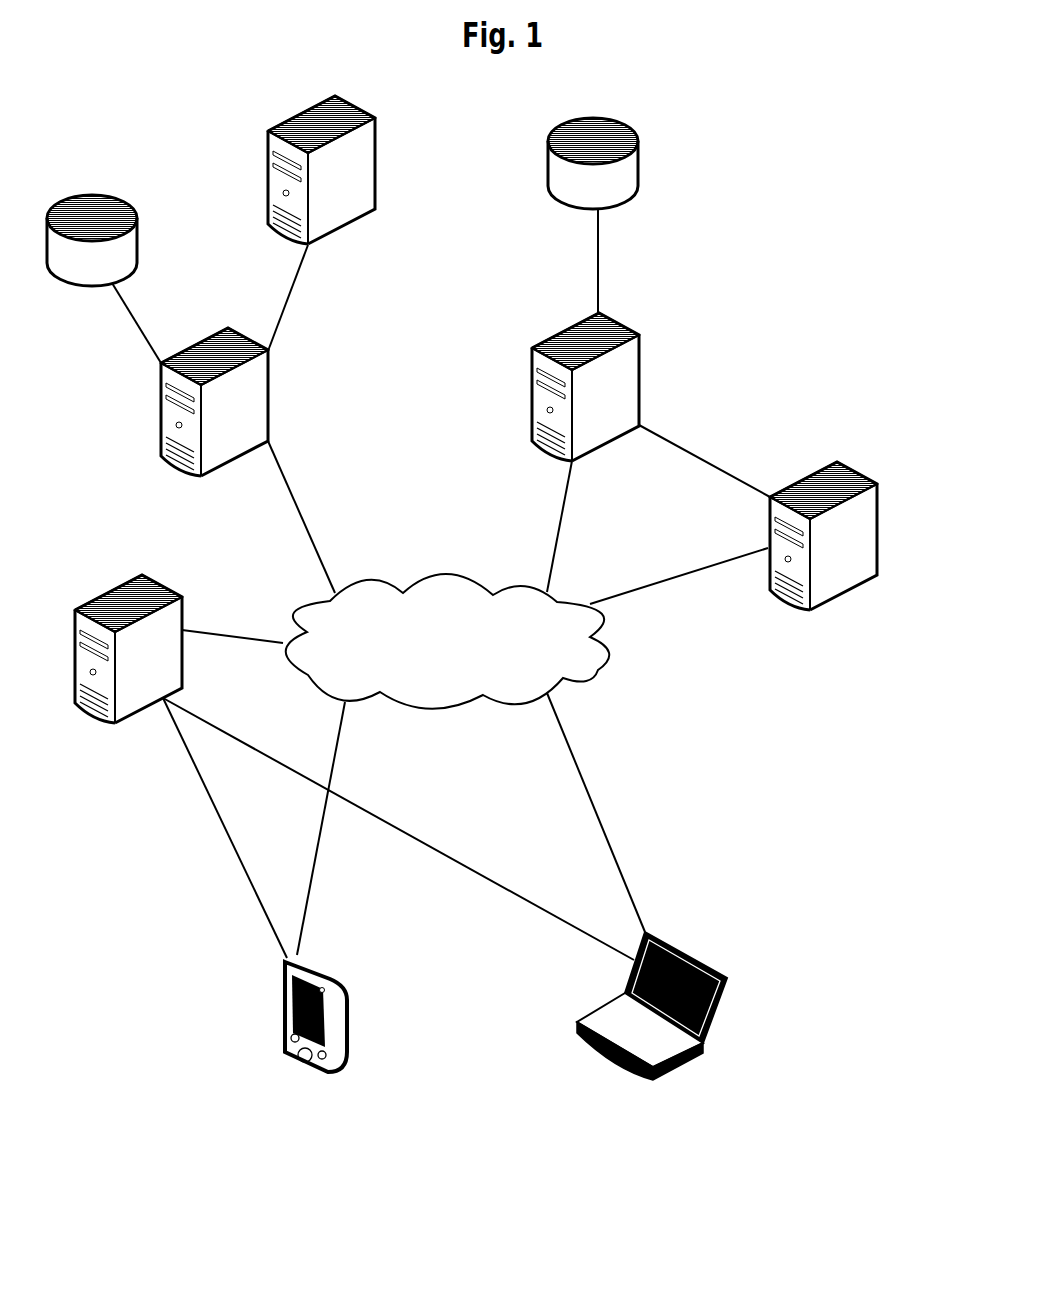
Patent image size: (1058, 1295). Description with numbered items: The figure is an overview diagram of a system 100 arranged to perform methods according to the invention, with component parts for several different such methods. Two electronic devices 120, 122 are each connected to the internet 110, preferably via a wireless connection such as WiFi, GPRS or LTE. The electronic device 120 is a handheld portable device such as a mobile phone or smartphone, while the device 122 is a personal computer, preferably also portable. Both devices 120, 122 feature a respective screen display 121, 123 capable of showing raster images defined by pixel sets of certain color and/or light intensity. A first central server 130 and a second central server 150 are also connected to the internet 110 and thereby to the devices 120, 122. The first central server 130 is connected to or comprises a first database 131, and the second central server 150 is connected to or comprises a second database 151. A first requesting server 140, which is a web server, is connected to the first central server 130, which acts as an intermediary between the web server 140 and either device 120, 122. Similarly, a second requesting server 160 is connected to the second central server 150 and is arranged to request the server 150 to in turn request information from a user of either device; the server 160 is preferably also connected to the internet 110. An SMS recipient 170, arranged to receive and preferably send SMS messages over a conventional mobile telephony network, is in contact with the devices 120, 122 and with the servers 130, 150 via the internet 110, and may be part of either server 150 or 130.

The system 100 is at (875, 243).
The internet 110 is at (448, 641).
The electronic device 120 is at (285, 1053).
The screen display 121 is at (293, 1003).
The electronic device 122 is at (617, 1063).
The screen display 123 is at (723, 1003).
The first central server 130 is at (214, 402).
The first database 131 is at (92, 240).
The first requesting server 140 is at (321, 170).
The second central server 150 is at (585, 387).
The second database 151 is at (593, 163).
The second requesting server 160 is at (823, 536).
The SMS recipient 170 is at (128, 649).